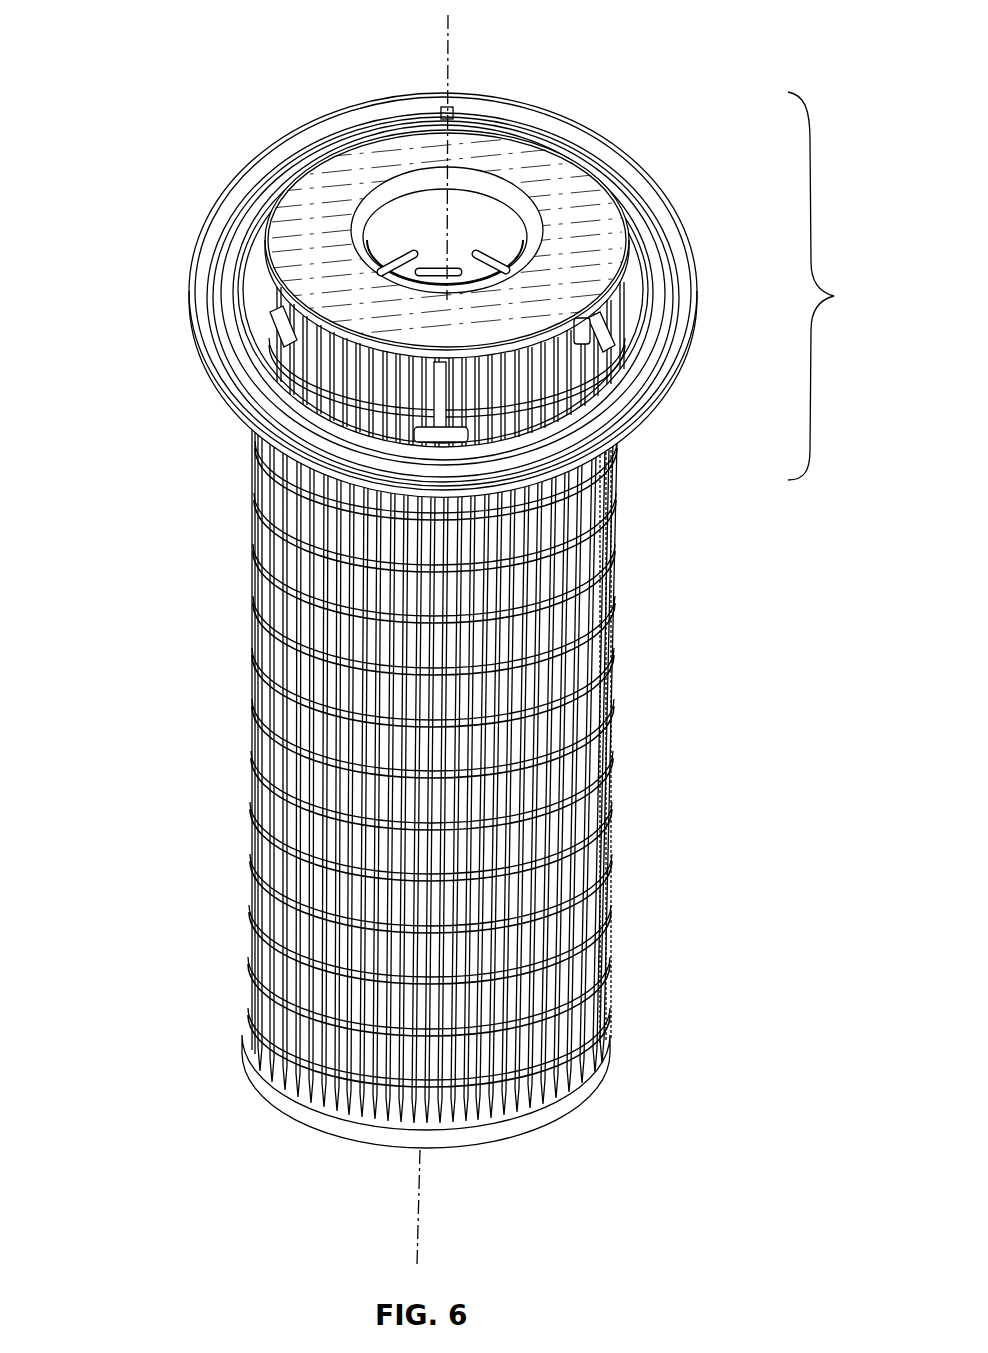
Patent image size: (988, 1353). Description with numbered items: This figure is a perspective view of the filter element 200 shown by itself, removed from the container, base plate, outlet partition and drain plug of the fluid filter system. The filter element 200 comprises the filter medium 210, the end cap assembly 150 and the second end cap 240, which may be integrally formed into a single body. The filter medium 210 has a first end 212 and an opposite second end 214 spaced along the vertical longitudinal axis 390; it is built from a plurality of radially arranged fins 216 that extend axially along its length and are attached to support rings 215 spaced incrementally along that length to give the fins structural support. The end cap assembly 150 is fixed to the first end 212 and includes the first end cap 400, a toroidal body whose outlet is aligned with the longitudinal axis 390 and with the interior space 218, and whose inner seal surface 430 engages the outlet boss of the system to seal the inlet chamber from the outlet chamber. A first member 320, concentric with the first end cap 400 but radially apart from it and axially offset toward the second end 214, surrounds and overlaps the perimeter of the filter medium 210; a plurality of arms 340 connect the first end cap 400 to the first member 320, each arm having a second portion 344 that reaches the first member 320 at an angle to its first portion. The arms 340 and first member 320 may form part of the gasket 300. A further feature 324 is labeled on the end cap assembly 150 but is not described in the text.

The end cap assembly 150 is at (842, 286).
The filter element 200 is at (140, 40).
The filter medium 210 is at (607, 847).
The first end 212 is at (267, 303).
The second end 214 is at (550, 1097).
The support rings 215 is at (607, 790).
The fins 216 is at (477, 1120).
The interior space 218 is at (417, 242).
The second end cap 240 is at (605, 1013).
The gasket 300 is at (690, 287).
The first member 320 is at (668, 412).
The flange slot 324 is at (583, 325).
The arms 340 is at (265, 338).
The second portion 344 is at (613, 352).
The longitudinal axis 390 is at (452, 22).
The first end cap 400 is at (535, 175).
The inner seal surface 430 is at (387, 197).